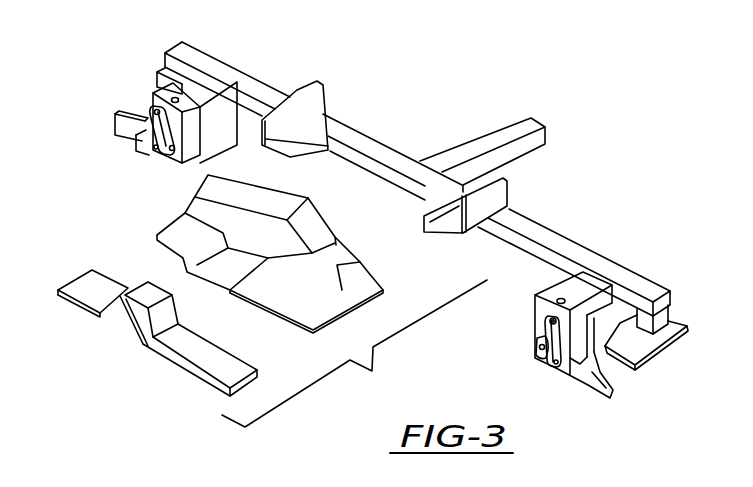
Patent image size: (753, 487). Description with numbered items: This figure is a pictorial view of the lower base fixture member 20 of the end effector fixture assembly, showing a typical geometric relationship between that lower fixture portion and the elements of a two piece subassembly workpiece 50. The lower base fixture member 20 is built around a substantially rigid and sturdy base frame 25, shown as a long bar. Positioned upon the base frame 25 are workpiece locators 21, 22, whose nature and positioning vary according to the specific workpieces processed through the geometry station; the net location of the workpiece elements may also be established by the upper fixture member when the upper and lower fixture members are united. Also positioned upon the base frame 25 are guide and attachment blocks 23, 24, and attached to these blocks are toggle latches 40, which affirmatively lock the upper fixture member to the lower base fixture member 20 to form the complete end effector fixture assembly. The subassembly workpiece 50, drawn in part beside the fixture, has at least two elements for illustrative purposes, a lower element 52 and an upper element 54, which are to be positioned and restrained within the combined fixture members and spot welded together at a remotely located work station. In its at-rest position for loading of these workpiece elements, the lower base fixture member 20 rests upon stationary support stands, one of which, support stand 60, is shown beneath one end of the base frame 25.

The lower base fixture member 20 is at (364, 126).
The workpiece locator 21 is at (331, 97).
The workpiece locator 22 is at (513, 195).
The guide and attachment block 23 is at (533, 297).
The guide and attachment block 24 is at (152, 92).
The base frame 25 is at (537, 129).
The toggle latch 40 is at (128, 150).
The subassembly workpiece 50 is at (354, 353).
The lower element 52 is at (172, 222).
The upper element 54 is at (73, 280).
The stationary support stand 60 is at (643, 357).